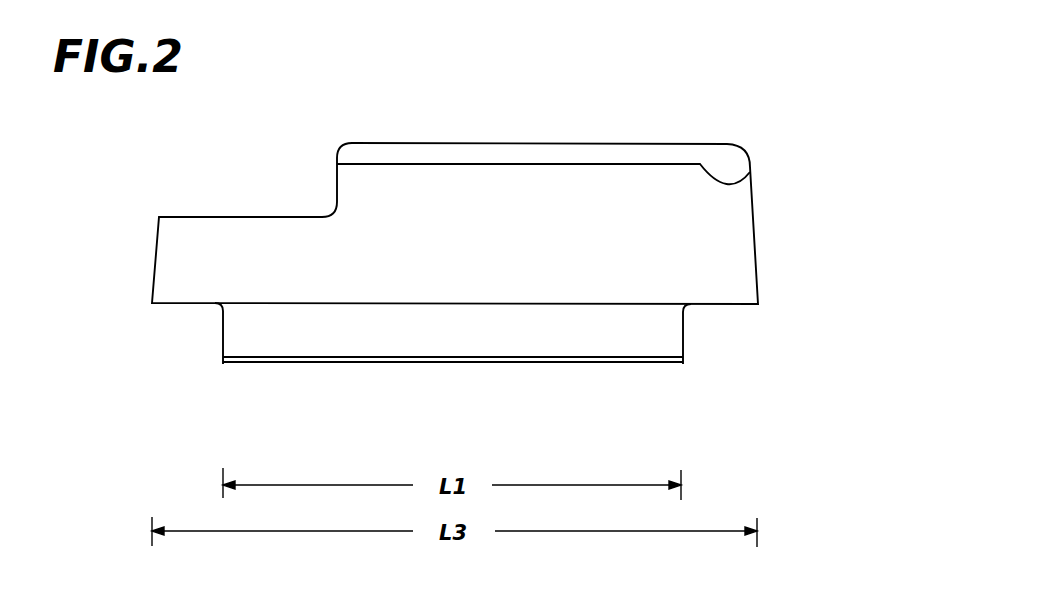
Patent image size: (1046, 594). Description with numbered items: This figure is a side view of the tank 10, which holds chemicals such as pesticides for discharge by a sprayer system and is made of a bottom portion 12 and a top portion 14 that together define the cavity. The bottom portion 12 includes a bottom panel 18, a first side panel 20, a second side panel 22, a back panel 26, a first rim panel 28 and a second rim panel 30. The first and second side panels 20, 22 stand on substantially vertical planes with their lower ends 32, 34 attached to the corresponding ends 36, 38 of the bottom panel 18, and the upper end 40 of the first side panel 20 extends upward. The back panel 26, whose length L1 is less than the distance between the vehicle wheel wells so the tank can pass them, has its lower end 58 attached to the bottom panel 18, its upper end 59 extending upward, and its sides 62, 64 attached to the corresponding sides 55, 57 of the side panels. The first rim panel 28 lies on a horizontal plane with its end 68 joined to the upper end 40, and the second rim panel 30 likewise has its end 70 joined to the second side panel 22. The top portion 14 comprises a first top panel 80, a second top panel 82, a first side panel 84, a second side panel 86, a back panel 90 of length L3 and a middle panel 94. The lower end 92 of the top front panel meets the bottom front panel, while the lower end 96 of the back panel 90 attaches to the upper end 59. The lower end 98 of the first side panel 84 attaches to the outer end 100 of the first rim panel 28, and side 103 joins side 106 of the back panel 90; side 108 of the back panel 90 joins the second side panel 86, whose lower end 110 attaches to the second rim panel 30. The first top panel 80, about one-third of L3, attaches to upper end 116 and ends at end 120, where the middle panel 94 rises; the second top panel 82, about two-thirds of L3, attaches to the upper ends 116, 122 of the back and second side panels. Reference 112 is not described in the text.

The tank 10 is at (690, 108).
The bottom portion 12 is at (120, 354).
The top portion 14 is at (116, 225).
The bottom panel 18 is at (483, 374).
The first side panel 20 is at (204, 367).
The second side panel 22 is at (688, 343).
The back panel 26 is at (590, 338).
The first rim panel 28 is at (173, 304).
The second rim panel 30 is at (736, 292).
The lower end of first side panel 32 is at (223, 365).
The lower end of second side panel 34 is at (700, 364).
The end of bottom panel 36 is at (268, 365).
The end of bottom panel 38 is at (681, 366).
The upper end of first side panel 40 is at (208, 312).
The side of first side panel 55 is at (217, 312).
The side of second side panel 57 is at (686, 330).
The lower end of back panel 58 is at (528, 363).
The upper end of back panel 59 is at (452, 304).
The side of back panel 62 is at (227, 333).
The side of back panel 64 is at (683, 332).
The end of first rim panel 68 is at (190, 305).
The end of second rim panel 70 is at (694, 307).
The first top panel 80 is at (222, 204).
The second top panel 82 is at (572, 132).
The first side panel 84 is at (138, 252).
The second side panel 86 is at (764, 214).
The back panel 90 is at (381, 280).
The lower end of front panel 92 is at (688, 318).
The middle panel 94 is at (324, 169).
The lower end of back panel 96 is at (631, 303).
The lower end 98 is at (153, 299).
The outer end of first rim panel 100 is at (170, 303).
The side of first side panel 103 is at (158, 235).
The side of back panel 106 is at (156, 233).
The side of back panel 108 is at (752, 196).
The lower end of second side panel 110 is at (756, 296).
The lower corner 112 is at (758, 305).
The upper end of back panel 116 is at (752, 177).
The end of first top panel 120 is at (332, 217).
The upper end of second side panel 122 is at (751, 168).